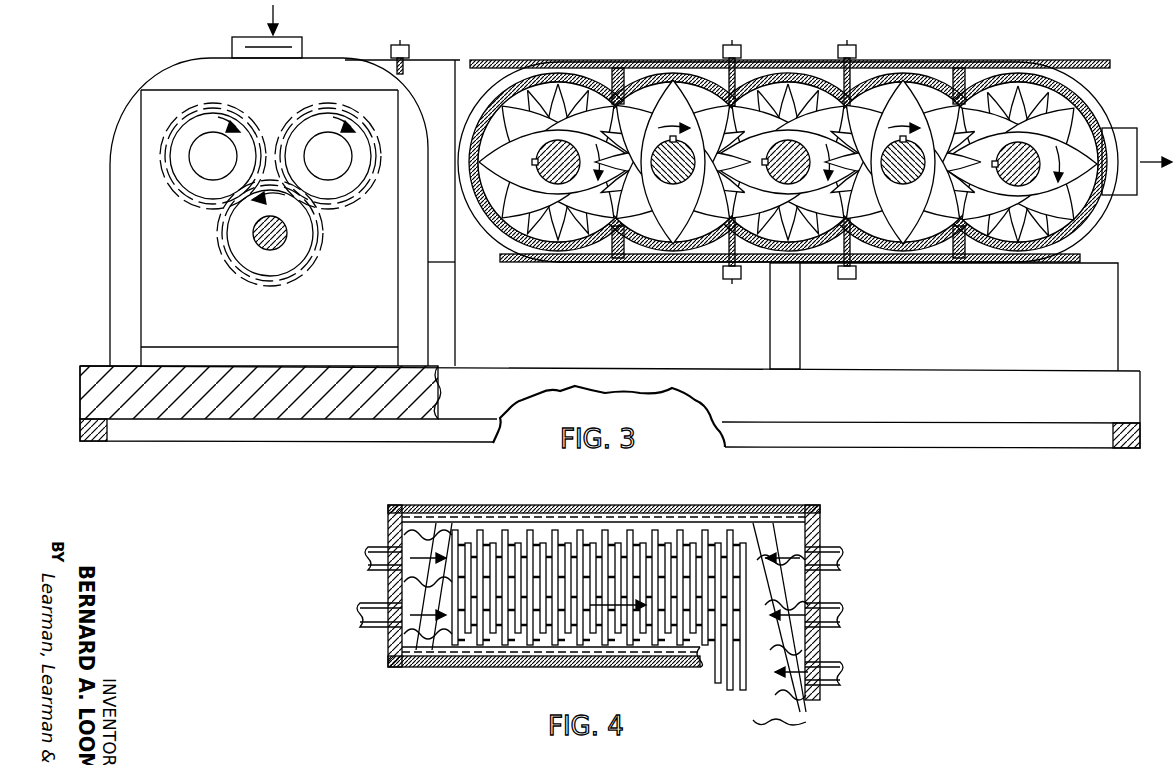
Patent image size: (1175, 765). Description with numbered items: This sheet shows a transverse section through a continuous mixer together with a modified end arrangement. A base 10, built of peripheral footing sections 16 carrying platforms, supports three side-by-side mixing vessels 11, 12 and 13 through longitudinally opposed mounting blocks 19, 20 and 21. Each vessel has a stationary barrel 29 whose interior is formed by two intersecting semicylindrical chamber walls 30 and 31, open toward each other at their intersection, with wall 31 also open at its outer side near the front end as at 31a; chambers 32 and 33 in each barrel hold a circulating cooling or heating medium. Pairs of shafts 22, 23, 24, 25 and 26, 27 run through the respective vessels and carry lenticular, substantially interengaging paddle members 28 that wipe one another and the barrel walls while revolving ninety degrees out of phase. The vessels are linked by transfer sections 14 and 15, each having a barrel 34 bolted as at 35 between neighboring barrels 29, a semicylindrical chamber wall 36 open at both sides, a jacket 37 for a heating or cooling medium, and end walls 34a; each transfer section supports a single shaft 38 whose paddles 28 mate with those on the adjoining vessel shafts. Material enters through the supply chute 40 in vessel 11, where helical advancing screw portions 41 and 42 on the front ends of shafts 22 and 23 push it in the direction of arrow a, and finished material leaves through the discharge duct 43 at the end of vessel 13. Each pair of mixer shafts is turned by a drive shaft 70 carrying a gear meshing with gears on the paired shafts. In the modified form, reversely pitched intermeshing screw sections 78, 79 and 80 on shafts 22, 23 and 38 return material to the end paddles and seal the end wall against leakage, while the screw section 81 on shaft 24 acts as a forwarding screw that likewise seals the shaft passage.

In FIG. 3, the base 10 is at (1130, 452).
In FIG. 3, the mixing vessel 11 is at (347, 55).
In FIG. 4, the mixing vessel 11 is at (825, 518).
In FIG. 3, the mixing vessel 12 is at (605, 55).
In FIG. 3, the mixing vessel 13 is at (980, 55).
In FIG. 3, the transfer section 14 is at (418, 55).
In FIG. 4, the transfer section 14 is at (826, 652).
In FIG. 3, the transfer section 15 is at (798, 58).
In FIG. 3, the peripheral footing sections 16 is at (1092, 448).
In FIG. 3, the mounting block 19 is at (116, 280).
In FIG. 3, the mounting block 20 is at (764, 308).
In FIG. 3, the mounting block 21 is at (1112, 312).
In FIG. 3, the shaft 22 is at (192, 176).
In FIG. 4, the shaft 22 is at (842, 560).
In FIG. 3, the shaft 23 is at (351, 176).
In FIG. 4, the shaft 23 is at (842, 612).
In FIG. 3, the shaft 24 is at (544, 178).
In FIG. 3, the shaft 25 is at (680, 178).
In FIG. 3, the shaft 26 is at (904, 178).
In FIG. 3, the shaft 27 is at (1002, 178).
In FIG. 3, the paddle members 28 is at (520, 250).
In FIG. 4, the paddle members 28 is at (636, 560).
In FIG. 3, the barrel 29 is at (662, 82).
In FIG. 3, the semicylindrical interior chamber wall 30 is at (548, 68).
In FIG. 3, the semicylindrical interior chamber wall 31 is at (696, 76).
In FIG. 3, the opening 31a is at (758, 103).
In FIG. 3, the chamber 32 is at (580, 68).
In FIG. 3, the chamber 33 is at (638, 74).
In FIG. 3, the barrel 34 is at (766, 58).
In FIG. 3, the end walls 34a is at (748, 262).
In FIG. 3, the bolts 35 is at (858, 48).
In FIG. 3, the semicylindrical chamber wall 36 is at (840, 48).
In FIG. 3, the jacket 37 is at (742, 66).
In FIG. 3, the shaft 38 is at (776, 178).
In FIG. 4, the shaft 38 is at (842, 676).
In FIG. 3, the material supply chute 40 is at (304, 50).
In FIG. 4, the helical advancing screw portion 41 is at (426, 535).
In FIG. 4, the helical advancing screw portion 42 is at (416, 655).
In FIG. 3, the discharge duct 43 is at (1128, 130).
In FIG. 3, the drive shaft 70 is at (255, 250).
In FIG. 4, the screw section 78 is at (782, 535).
In FIG. 4, the screw section 79 is at (812, 588).
In FIG. 4, the screw section 80 is at (818, 700).
In FIG. 4, the screw section 81 is at (792, 724).
In FIG. 4, the direction arrow a is at (600, 608).